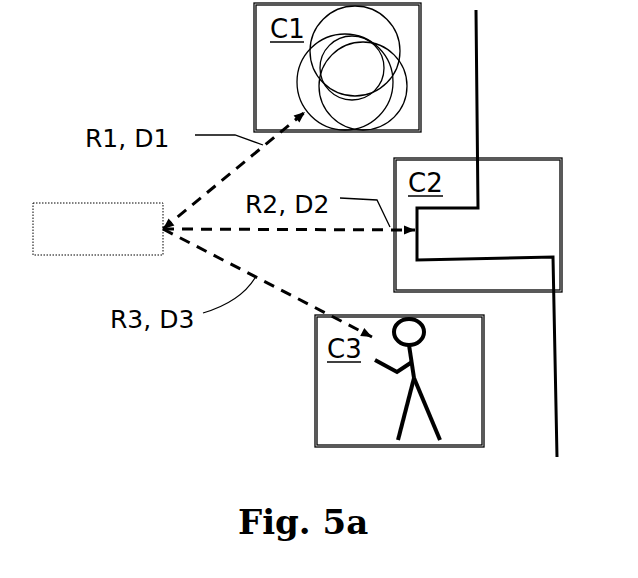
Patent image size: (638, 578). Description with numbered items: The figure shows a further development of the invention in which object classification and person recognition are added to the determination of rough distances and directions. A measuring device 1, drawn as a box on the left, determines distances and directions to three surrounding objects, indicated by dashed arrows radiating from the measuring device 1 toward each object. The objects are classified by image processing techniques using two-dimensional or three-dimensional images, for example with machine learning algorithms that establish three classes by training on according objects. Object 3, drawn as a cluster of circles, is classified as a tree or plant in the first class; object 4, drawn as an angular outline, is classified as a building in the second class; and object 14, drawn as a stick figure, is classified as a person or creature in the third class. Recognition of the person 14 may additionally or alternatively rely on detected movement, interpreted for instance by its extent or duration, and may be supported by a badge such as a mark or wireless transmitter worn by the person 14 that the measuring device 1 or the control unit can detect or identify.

The measuring device 1 is at (103, 239).
The object (tree or plant) 3 is at (350, 91).
The object (building) 4 is at (523, 241).
The object (person or creature) 14 is at (413, 375).